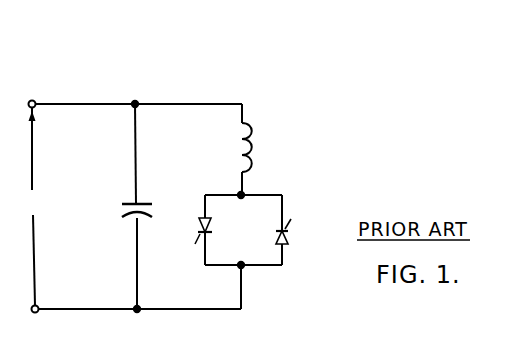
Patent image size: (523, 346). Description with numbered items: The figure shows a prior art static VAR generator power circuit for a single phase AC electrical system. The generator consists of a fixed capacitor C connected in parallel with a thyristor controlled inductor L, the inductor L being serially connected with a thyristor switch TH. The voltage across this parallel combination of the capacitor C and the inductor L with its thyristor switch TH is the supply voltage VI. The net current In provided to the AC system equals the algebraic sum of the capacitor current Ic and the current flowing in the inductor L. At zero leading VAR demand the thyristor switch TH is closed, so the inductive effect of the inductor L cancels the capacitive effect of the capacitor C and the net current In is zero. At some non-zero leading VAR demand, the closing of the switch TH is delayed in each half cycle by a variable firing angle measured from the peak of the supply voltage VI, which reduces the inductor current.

The voltage VI is at (32, 207).
The net current In is at (88, 92).
The fixed capacitor C is at (122, 213).
The capacitor current Ic is at (127, 178).
The thyristor controlled inductor L is at (247, 141).
The thyristor switch TH is at (259, 241).